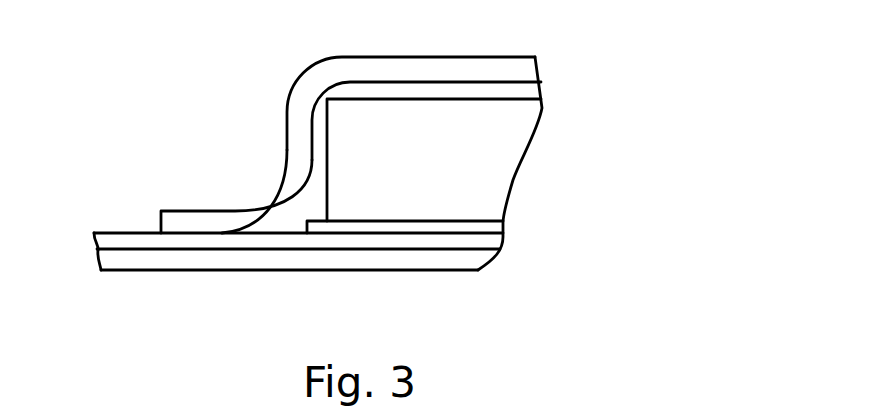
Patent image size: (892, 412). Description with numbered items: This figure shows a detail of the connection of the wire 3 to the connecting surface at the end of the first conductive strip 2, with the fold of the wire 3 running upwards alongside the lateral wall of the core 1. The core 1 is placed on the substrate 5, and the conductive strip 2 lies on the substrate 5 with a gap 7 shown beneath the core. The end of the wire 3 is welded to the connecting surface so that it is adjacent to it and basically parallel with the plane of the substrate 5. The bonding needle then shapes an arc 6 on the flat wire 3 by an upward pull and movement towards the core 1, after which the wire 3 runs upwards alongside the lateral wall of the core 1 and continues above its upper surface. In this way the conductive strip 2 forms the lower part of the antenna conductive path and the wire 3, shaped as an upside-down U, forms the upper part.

The core 1 is at (393, 133).
The conductive strip 2 is at (492, 242).
The wire 3 is at (517, 72).
The substrate 5 is at (477, 255).
The arc 6 is at (280, 192).
The gap 7 is at (492, 227).